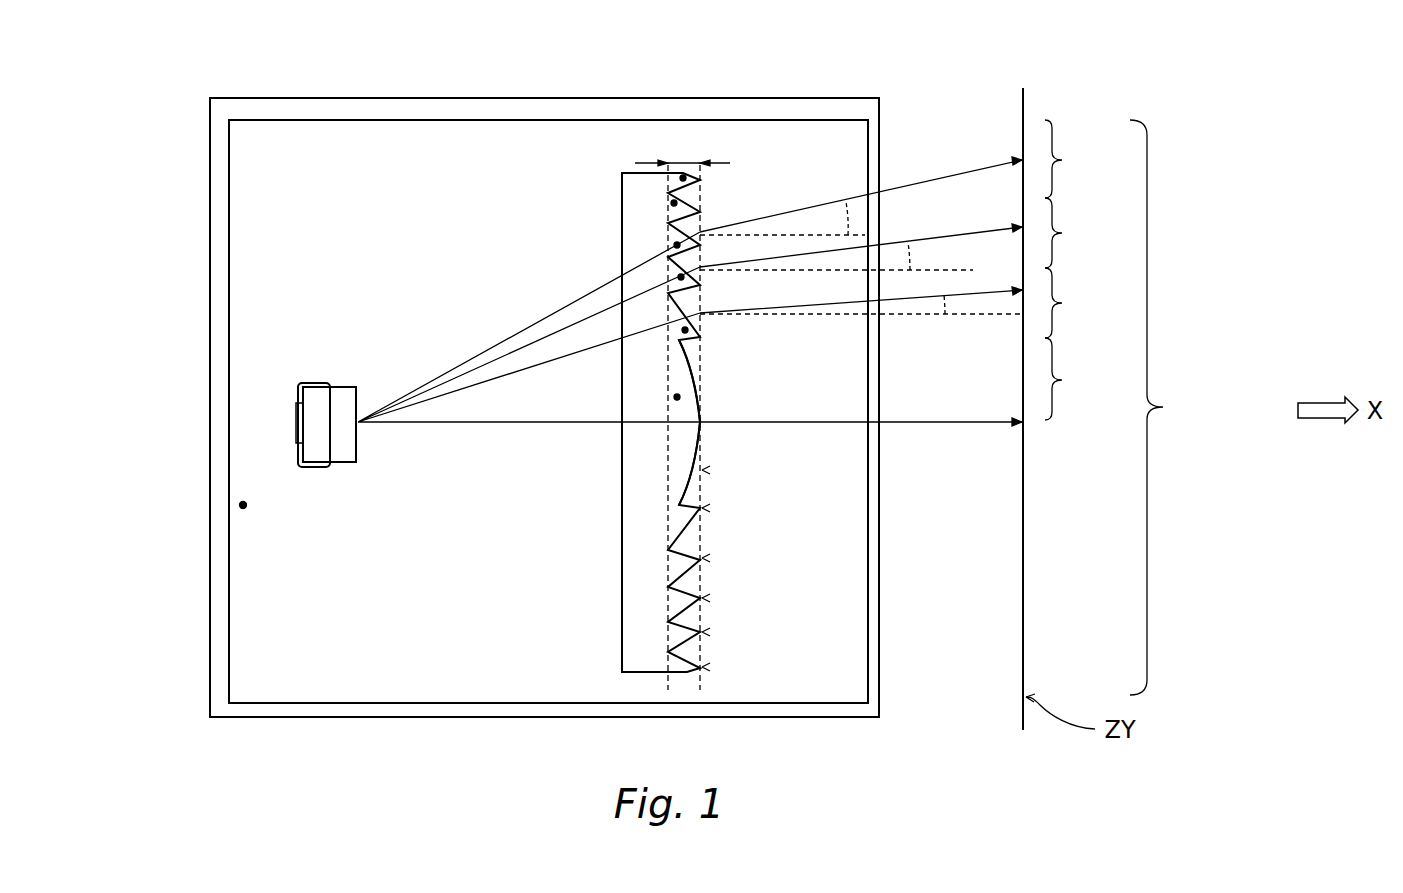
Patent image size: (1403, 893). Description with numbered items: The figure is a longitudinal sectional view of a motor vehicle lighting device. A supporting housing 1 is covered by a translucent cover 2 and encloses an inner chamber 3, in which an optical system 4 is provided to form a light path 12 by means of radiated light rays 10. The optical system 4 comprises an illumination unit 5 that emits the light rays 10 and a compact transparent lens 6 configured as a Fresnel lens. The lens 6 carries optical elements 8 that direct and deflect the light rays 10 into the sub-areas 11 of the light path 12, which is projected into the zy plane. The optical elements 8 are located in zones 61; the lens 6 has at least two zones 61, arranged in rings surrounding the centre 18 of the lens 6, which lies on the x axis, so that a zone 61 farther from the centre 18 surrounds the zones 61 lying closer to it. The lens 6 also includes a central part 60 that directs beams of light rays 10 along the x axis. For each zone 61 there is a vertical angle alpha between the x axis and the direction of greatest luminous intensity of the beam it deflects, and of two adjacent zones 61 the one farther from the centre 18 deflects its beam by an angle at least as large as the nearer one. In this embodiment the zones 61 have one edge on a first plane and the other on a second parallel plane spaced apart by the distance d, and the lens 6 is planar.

The supporting housing 1 is at (210, 625).
The translucent cover 2 is at (880, 685).
The inner chamber 3 is at (243, 505).
The optical system 4 is at (363, 226).
The illumination unit 5 is at (300, 427).
The lens 6 is at (653, 170).
The optical elements 8 is at (702, 470).
The light rays 10 is at (810, 420).
The sub-areas 11 is at (1072, 270).
The light path 12 is at (1113, 409).
The centre of the lens 18 is at (697, 423).
The central part 60 is at (677, 397).
The zones 61 is at (685, 330).